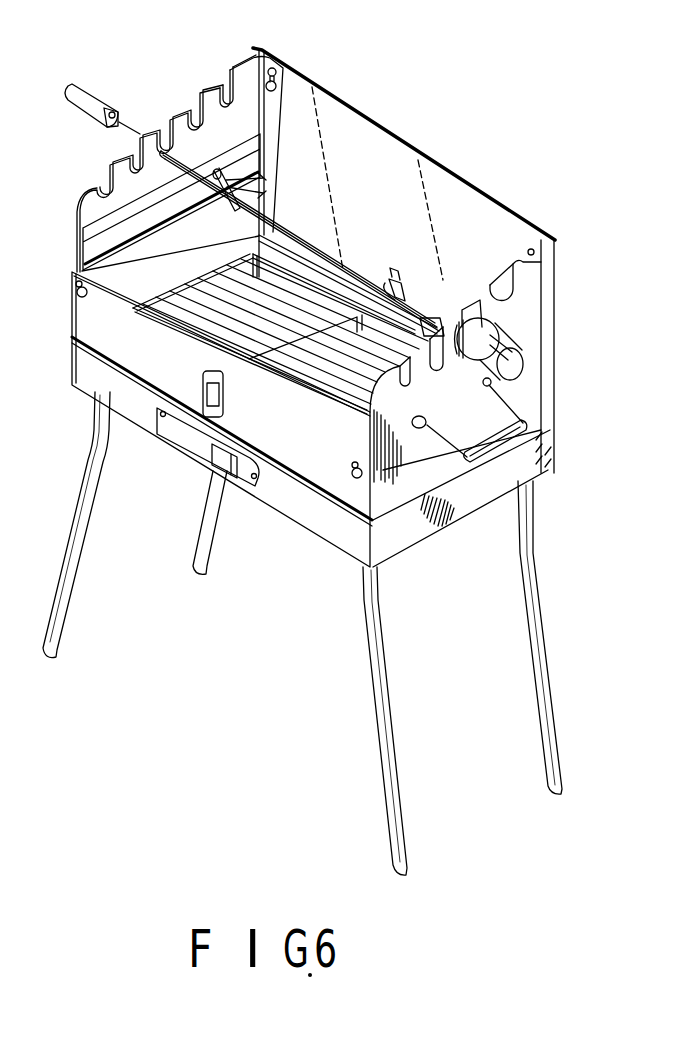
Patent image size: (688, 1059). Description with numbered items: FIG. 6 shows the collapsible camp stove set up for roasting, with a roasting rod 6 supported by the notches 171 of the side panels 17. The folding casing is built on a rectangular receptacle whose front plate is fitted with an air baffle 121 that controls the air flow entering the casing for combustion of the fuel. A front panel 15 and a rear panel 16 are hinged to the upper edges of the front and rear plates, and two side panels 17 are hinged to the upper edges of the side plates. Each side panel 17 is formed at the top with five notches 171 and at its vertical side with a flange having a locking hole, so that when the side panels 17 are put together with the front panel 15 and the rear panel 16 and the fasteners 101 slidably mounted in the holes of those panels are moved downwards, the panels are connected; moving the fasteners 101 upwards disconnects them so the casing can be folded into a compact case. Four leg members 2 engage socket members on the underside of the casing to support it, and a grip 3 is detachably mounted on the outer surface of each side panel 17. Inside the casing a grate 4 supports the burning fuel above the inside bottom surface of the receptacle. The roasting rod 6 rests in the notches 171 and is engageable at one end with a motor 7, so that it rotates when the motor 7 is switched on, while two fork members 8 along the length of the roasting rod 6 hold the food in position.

The leg member 2 is at (376, 641).
The grip 3 is at (497, 443).
The grate 4 is at (150, 317).
The roasting rod 6 is at (167, 152).
The motor 7 is at (500, 357).
The fork member 8 is at (392, 278).
The front panel 15 is at (317, 468).
The rear panel 16 is at (356, 140).
The side panel 17 is at (200, 140).
The fastener 101 is at (275, 62).
The air baffle 121 is at (212, 465).
The notch 171 is at (225, 82).